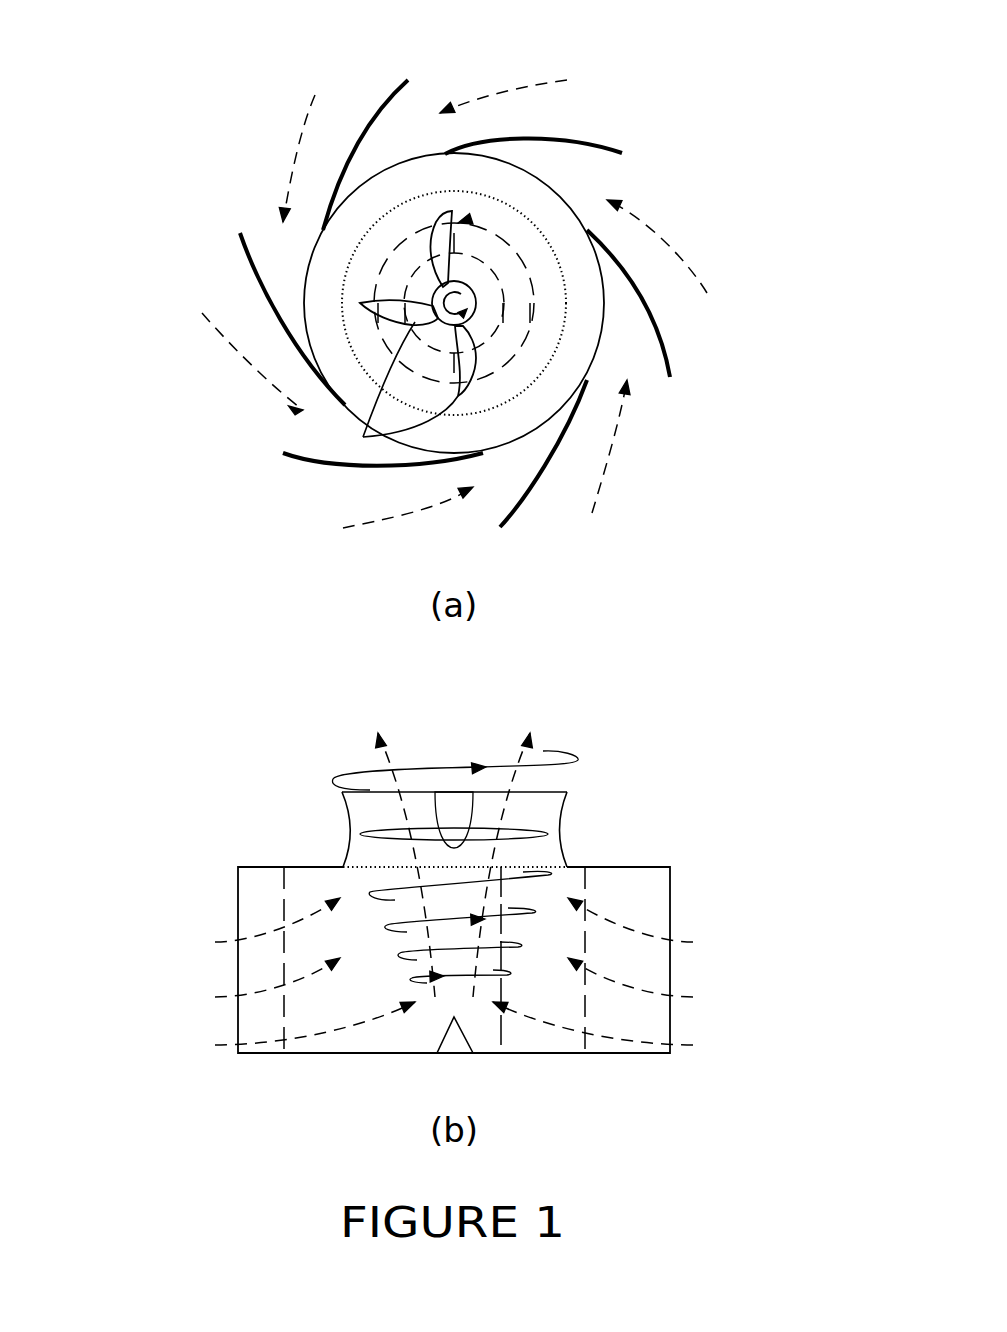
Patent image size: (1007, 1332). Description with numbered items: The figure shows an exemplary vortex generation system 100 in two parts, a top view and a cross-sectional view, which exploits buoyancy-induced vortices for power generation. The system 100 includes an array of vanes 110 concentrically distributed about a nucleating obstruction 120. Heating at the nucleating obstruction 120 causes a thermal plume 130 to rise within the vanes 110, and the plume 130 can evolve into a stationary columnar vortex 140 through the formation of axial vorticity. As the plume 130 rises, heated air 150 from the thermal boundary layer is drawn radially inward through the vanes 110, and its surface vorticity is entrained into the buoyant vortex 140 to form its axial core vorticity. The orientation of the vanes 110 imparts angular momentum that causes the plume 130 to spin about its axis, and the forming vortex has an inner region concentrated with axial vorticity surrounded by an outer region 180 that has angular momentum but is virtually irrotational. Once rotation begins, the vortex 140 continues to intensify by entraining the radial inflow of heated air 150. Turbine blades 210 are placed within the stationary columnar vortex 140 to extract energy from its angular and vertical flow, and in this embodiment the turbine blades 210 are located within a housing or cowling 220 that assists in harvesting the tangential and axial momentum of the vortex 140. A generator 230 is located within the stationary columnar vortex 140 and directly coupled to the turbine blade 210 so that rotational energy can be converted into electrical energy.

The vortex generation system 100 is at (300, 57).
The vanes 110 is at (408, 80).
The nucleating obstruction 120 is at (453, 1043).
The thermal plume 130 is at (402, 810).
The stationary columnar vortex 140 is at (512, 222).
The air 150 is at (292, 155).
The outer region 180 is at (218, 942).
The turbine blades 210 is at (382, 426).
The housing or cowling 220 is at (343, 857).
The generator 230 is at (454, 800).